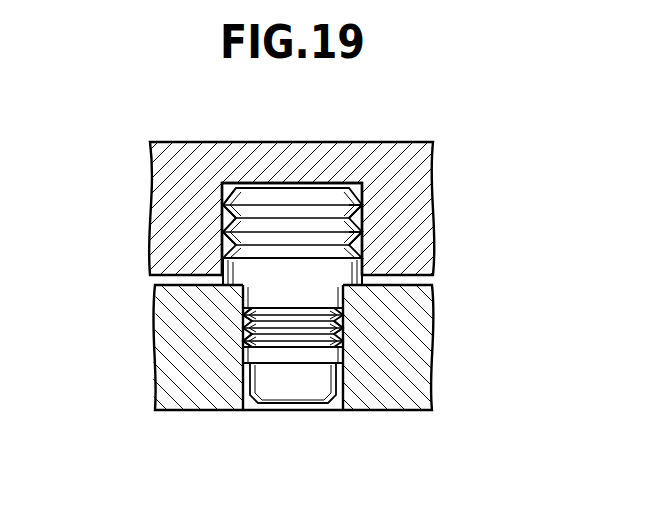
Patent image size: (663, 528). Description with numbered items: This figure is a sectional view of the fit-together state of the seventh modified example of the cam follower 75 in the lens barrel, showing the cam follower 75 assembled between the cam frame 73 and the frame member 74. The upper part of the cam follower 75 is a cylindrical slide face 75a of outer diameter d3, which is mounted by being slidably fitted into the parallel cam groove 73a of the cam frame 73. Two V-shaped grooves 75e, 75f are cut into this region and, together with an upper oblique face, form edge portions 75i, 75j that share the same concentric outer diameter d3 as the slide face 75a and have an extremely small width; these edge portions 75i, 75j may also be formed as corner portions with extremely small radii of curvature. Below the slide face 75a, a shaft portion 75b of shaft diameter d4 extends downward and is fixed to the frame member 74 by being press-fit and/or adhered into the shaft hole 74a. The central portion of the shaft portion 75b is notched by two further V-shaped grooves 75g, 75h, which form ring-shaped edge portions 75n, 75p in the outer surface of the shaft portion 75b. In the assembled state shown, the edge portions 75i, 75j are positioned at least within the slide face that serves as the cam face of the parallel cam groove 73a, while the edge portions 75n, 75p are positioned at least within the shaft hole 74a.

The cam frame 73 is at (205, 163).
The parallel cam groove 73a is at (378, 191).
The frame member 74 is at (183, 392).
The shaft hole 74a is at (243, 392).
The cam follower 75 is at (275, 188).
The slide face 75a is at (363, 273).
The shaft portion 75b is at (343, 302).
The V-shaped groove 75e is at (351, 217).
The V-shaped groove 75f is at (351, 244).
The V-shaped groove 75g is at (344, 318).
The V-shaped groove 75h is at (344, 335).
The edge portion 75i is at (223, 205).
The edge portion 75j is at (223, 232).
The edge portion 75n is at (243, 321).
The edge portion 75p is at (243, 342).